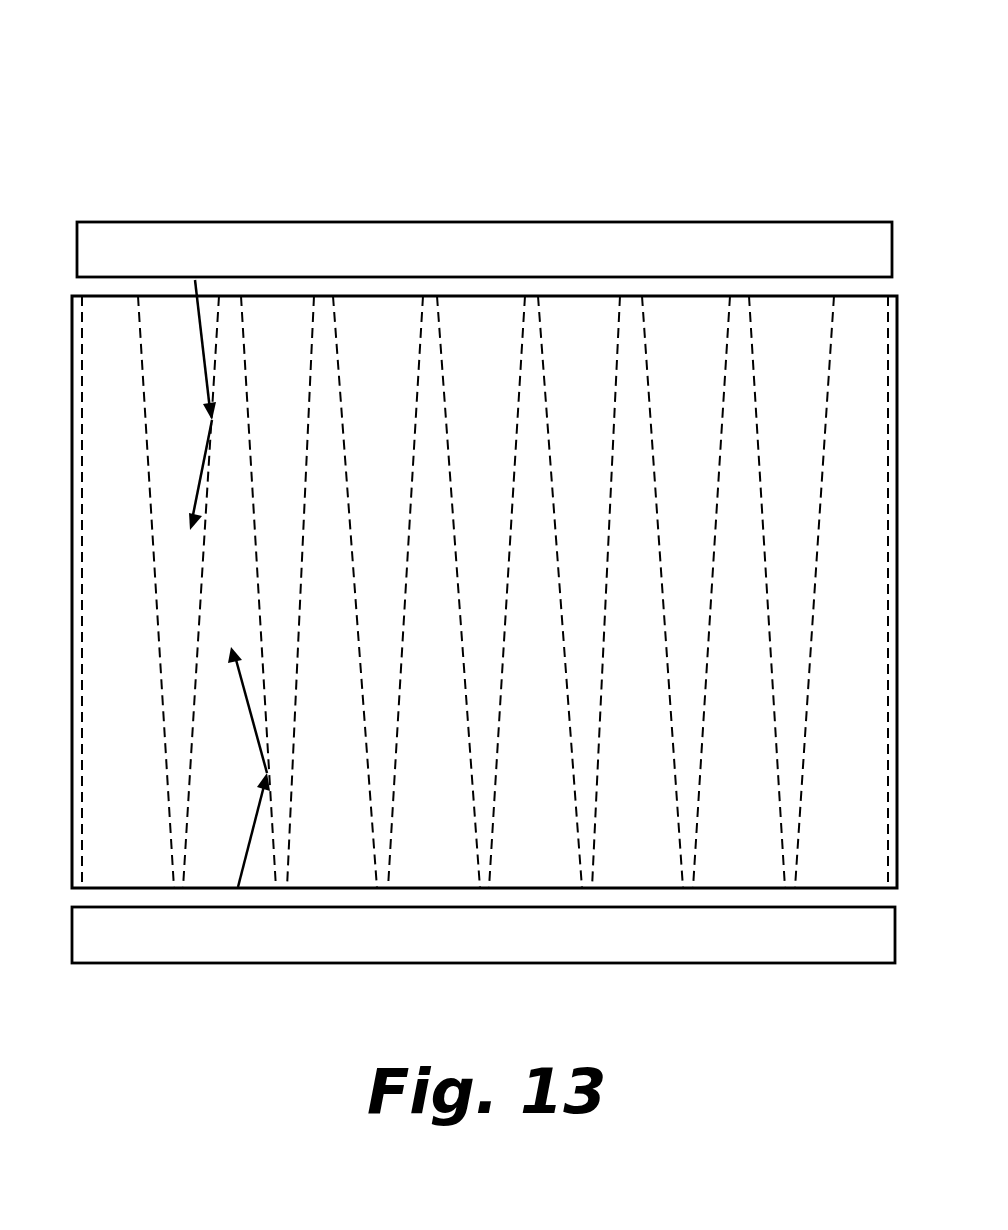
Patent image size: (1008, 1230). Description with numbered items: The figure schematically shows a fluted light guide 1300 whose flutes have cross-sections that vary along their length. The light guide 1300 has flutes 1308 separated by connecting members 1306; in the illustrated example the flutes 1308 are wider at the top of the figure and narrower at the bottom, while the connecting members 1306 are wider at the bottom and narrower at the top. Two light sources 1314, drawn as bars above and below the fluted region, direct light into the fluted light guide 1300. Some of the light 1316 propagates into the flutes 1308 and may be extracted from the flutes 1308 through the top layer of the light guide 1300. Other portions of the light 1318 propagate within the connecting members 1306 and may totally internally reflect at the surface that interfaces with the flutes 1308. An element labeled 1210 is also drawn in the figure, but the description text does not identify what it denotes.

The fluted light guide 1300 is at (148, 90).
The light sources 1314 is at (125, 222).
The medium 1210 is at (532, 313).
The flutes 1308 is at (377, 332).
The connecting members 1306 is at (414, 875).
The light 1316 is at (200, 323).
The light 1318 is at (246, 866).